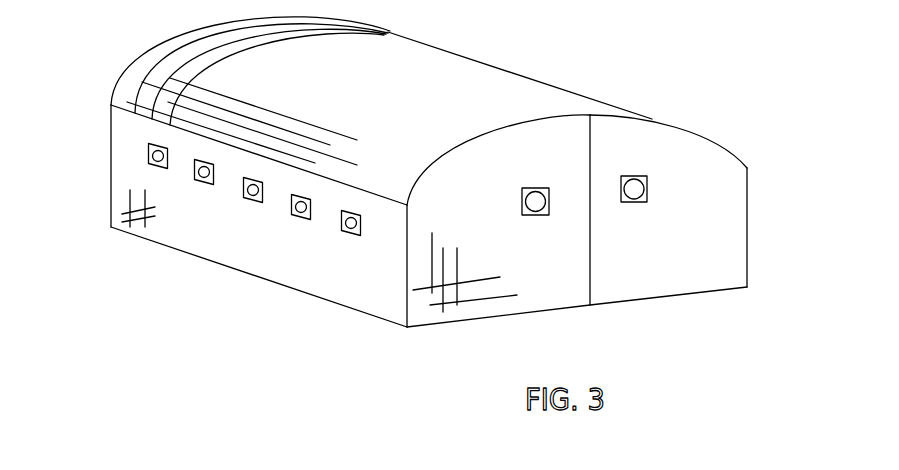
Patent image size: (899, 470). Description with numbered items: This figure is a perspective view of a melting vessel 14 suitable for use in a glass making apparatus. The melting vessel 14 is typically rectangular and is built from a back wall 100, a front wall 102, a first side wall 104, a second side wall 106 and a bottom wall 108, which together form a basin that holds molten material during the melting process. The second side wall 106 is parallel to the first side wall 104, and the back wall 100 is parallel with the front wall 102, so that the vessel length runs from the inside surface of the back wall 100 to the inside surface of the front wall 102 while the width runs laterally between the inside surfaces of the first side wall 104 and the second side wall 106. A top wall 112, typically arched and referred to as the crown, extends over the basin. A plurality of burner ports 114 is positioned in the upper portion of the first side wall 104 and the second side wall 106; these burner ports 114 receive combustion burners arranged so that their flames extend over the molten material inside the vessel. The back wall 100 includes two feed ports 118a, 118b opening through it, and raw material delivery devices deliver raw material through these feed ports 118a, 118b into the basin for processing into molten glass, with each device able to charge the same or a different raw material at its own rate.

The melting vessel 14 is at (645, 77).
The back wall 100 is at (688, 275).
The front wall 102 is at (100, 130).
The first side wall 104 is at (380, 293).
The second side wall 106 is at (758, 198).
The bottom wall 108 is at (571, 317).
The top wall 112 is at (512, 83).
The burner ports 114 is at (155, 168).
The feed port 118a is at (535, 213).
The feed port 118b is at (637, 201).